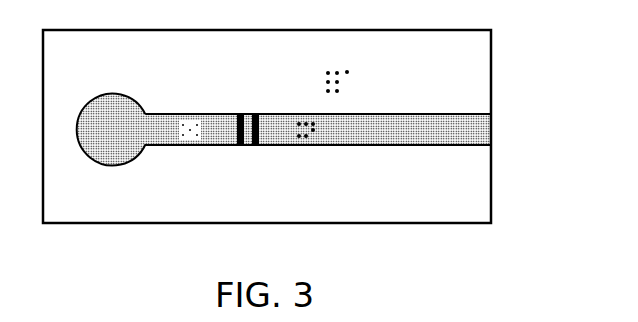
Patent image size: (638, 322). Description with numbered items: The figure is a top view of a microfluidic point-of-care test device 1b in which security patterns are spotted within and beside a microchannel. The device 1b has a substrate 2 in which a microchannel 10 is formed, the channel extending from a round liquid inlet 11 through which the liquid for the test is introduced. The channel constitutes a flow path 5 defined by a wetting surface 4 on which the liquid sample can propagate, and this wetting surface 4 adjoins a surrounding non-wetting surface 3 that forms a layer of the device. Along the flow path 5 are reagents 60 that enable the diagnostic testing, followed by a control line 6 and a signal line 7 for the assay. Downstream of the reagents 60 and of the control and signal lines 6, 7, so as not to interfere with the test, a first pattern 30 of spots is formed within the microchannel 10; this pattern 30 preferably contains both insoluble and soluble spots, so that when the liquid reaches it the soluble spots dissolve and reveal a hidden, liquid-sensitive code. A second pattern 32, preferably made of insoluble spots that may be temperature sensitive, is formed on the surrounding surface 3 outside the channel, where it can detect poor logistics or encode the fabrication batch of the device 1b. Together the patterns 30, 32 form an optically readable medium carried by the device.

The test device 1b is at (513, 224).
The substrate 2 is at (494, 67).
The surrounding non-wetting surface 3 is at (410, 52).
The wetting surface 4 is at (284, 123).
The flow path 5 is at (284, 123).
The control line 6 is at (239, 112).
The signal line 7 is at (256, 112).
The microchannel 10 is at (404, 132).
The liquid inlet 11 is at (124, 96).
The first pattern 30 is at (318, 146).
The second pattern 32 is at (347, 92).
The reagents 60 is at (190, 149).